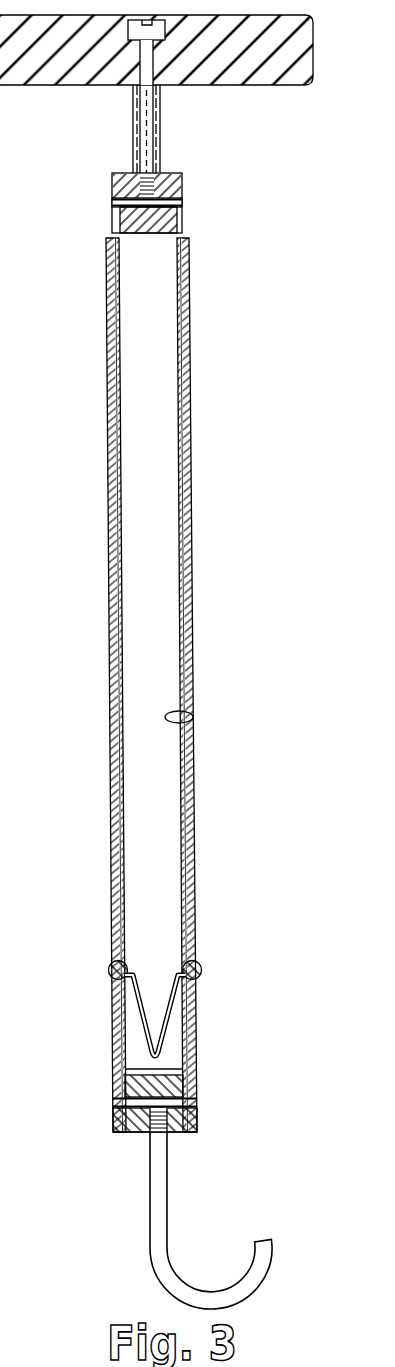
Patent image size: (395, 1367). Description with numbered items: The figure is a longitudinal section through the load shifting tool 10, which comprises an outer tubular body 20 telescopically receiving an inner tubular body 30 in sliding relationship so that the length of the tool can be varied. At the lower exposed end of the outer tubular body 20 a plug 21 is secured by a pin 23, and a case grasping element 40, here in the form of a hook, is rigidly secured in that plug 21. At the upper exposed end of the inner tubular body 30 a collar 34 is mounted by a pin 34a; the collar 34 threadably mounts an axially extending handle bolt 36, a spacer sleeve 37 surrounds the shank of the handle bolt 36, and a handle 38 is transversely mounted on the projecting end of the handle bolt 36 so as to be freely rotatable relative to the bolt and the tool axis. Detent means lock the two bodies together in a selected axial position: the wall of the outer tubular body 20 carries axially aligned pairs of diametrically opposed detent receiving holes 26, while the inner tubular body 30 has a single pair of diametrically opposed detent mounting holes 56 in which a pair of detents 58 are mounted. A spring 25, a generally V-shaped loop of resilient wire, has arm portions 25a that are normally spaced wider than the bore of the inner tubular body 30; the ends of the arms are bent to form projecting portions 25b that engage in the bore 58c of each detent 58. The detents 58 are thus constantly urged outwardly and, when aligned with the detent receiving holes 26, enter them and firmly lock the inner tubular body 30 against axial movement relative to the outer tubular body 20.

The load shifting tool 10 is at (204, 651).
The outer tubular body 20 is at (143, 685).
The plug 21 is at (130, 1078).
The pin 23 is at (197, 1100).
The spring 25 is at (156, 971).
The arm portions 25a is at (142, 1010).
The projecting portions 25b is at (183, 967).
The detent receiving holes 26 is at (107, 318).
The inner tubular body 30 is at (193, 717).
The collar 34 is at (155, 233).
The pin 34a is at (182, 203).
The handle bolt 36 is at (147, 132).
The spacer sleeve 37 is at (133, 143).
The handle 38 is at (313, 37).
The case grasping element 40 is at (167, 1182).
The detent mounting holes 56 is at (115, 935).
The detents 58 is at (110, 978).
The bore 58c is at (128, 968).